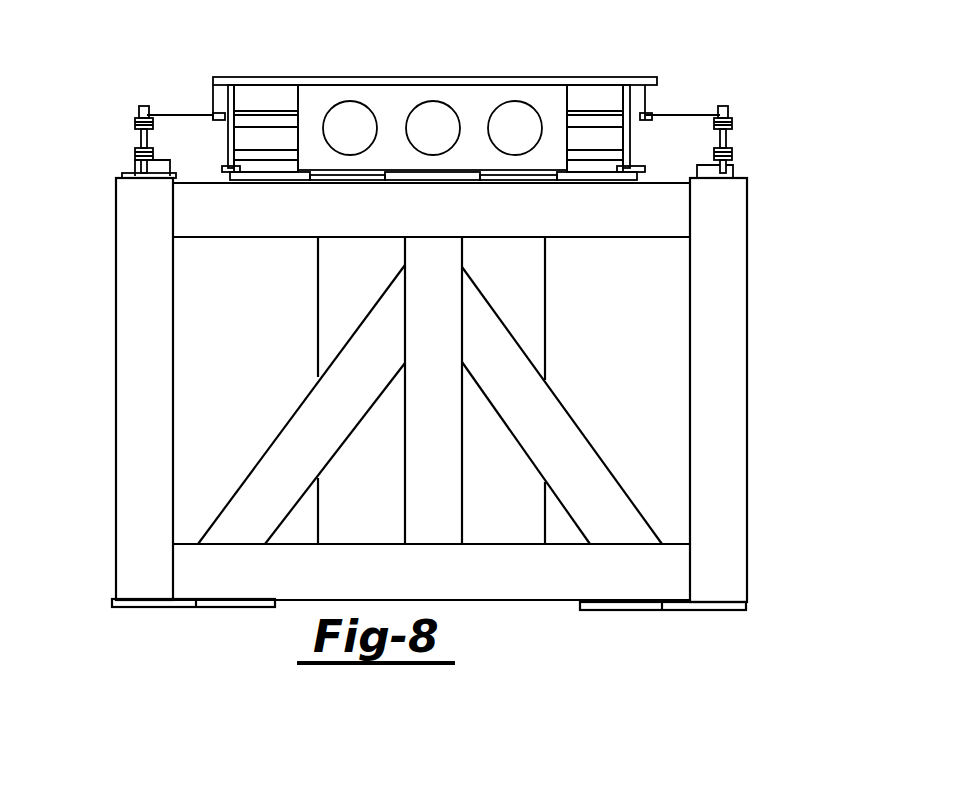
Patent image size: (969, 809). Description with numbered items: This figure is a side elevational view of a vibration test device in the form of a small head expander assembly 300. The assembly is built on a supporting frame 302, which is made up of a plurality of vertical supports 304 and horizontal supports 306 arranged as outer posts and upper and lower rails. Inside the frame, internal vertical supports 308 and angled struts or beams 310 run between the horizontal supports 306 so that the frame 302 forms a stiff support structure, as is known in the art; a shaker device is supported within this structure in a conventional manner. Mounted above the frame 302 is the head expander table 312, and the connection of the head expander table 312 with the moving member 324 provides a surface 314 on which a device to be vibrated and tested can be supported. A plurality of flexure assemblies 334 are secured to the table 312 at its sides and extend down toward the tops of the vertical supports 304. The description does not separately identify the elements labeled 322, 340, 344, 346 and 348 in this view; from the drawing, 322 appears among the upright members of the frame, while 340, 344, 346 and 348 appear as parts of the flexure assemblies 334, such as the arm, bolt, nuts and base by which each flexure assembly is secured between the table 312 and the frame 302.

The small head expander assembly 300 is at (796, 329).
The supporting frame 302 is at (762, 502).
The vertical supports 304 is at (160, 421).
The horizontal supports 306 is at (260, 222).
The internal vertical supports 308 is at (450, 483).
The angled struts or beams 310 is at (590, 453).
The head expander table 312 is at (552, 108).
The surface 314 is at (343, 84).
The intermediate vertical members 322 is at (533, 336).
The moving member 324 is at (400, 178).
The flexure assemblies 334 is at (133, 98).
The bracket arm 340 is at (172, 115).
The bolt 344 is at (135, 136).
The nut 346 is at (152, 140).
The base plate 348 is at (125, 176).